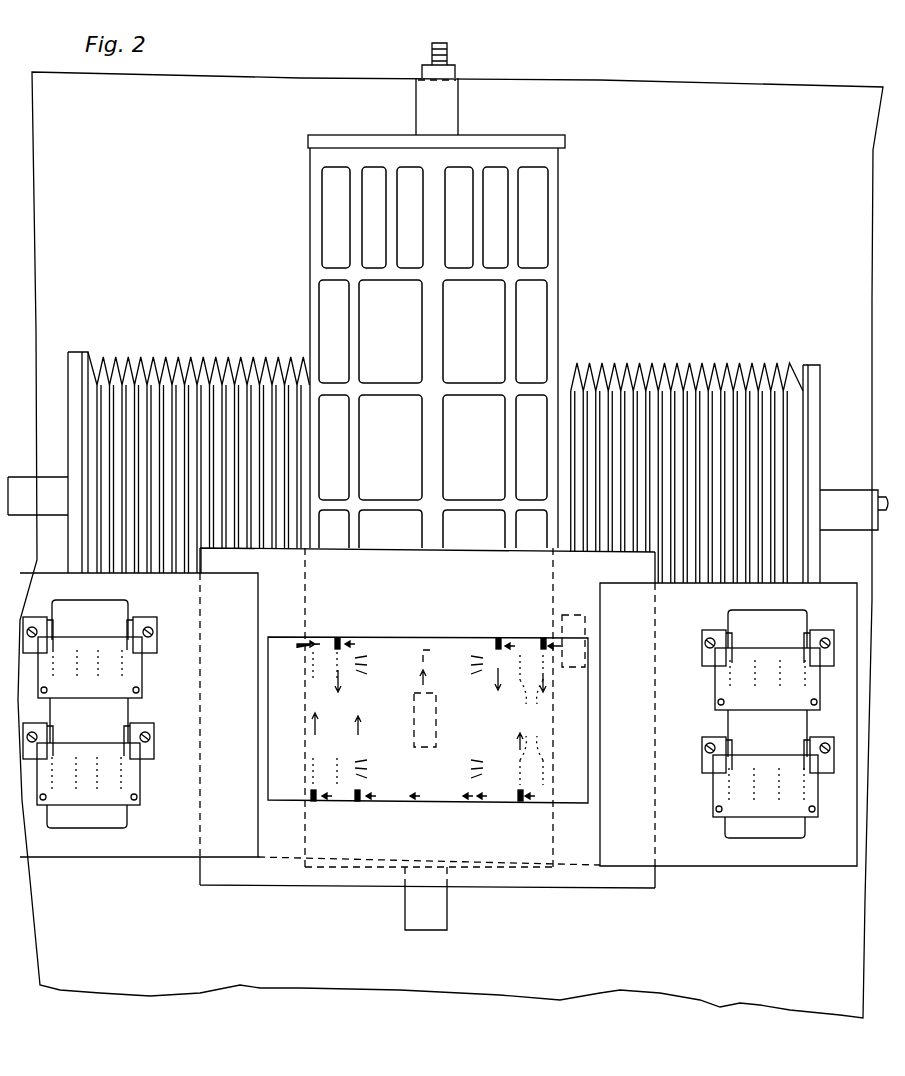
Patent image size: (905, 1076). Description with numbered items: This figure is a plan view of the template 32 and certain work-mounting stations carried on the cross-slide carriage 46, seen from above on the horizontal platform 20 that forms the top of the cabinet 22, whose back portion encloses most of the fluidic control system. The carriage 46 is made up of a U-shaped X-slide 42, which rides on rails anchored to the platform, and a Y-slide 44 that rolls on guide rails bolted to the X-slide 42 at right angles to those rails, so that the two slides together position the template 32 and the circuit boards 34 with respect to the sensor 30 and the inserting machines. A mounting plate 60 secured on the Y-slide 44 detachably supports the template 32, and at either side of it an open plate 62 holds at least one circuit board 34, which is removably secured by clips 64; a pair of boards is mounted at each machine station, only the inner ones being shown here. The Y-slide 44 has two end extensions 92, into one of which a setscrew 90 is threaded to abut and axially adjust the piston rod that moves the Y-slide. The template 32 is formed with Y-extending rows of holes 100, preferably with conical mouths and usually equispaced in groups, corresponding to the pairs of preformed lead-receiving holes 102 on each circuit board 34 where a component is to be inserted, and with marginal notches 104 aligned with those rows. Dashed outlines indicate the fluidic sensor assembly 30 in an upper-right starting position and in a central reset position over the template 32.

The horizontal platform 20 is at (736, 277).
The cabinet 22 is at (97, 988).
The fluidic sensor assembly 30 is at (436, 735).
The template 32 is at (400, 636).
The circuit board 34 is at (85, 742).
The X-slide 42 is at (826, 388).
The Y-slide 44 is at (560, 195).
The cross-slide carriage 46 is at (159, 940).
The mounting plate 60 is at (575, 890).
The open plate 62 is at (95, 858).
The clips 64 is at (38, 617).
The setscrew 90 is at (449, 52).
The end extensions 92 is at (460, 108).
The holes 100 is at (433, 719).
The lead-receiving holes 102 is at (120, 670).
The marginal notches 104 is at (338, 637).